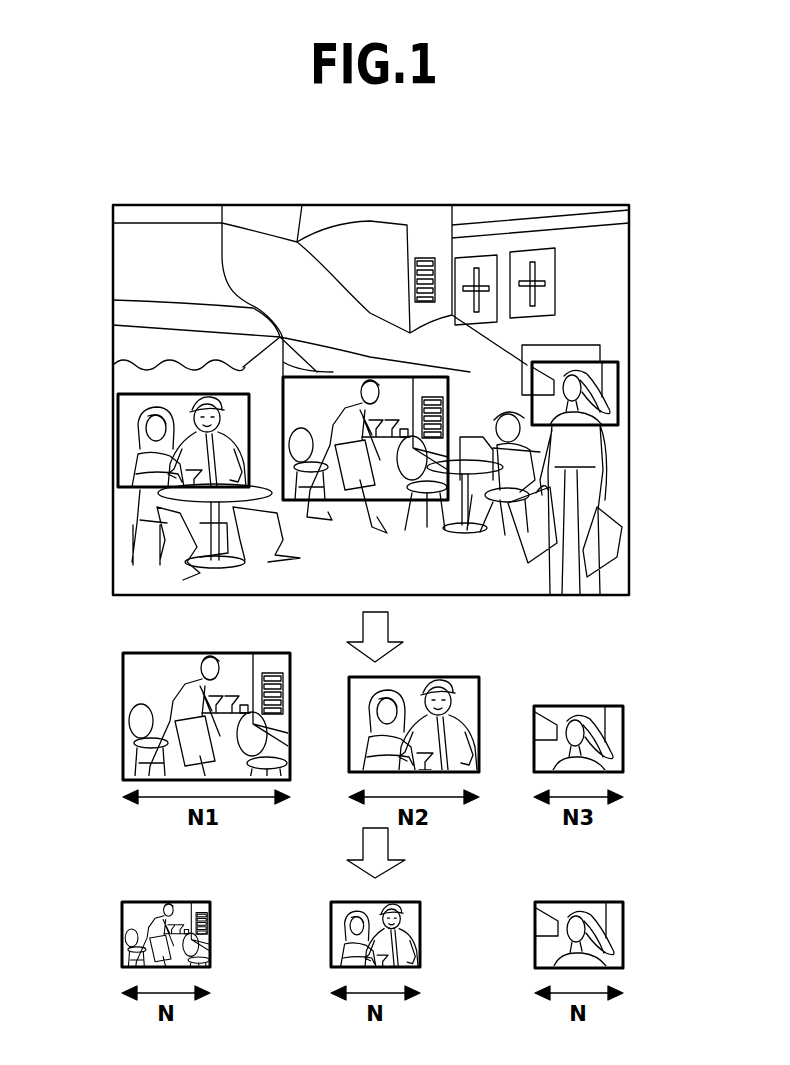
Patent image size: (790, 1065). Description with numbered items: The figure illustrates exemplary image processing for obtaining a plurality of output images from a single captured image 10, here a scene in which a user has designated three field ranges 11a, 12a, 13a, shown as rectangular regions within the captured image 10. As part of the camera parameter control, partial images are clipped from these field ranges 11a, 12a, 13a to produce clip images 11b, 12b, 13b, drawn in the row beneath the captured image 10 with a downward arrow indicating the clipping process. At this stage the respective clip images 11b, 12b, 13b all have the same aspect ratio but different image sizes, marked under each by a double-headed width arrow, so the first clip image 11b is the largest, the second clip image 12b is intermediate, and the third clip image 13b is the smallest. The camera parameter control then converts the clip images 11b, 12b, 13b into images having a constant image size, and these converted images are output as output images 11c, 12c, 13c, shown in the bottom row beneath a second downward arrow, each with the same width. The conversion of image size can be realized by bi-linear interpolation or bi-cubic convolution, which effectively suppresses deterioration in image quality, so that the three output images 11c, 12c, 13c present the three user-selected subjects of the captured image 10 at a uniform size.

The captured image 10 is at (377, 400).
The field range 11a is at (113, 300).
The field range 12a is at (118, 455).
The field range 13a is at (607, 428).
The clip image 11b is at (123, 748).
The clip image 12b is at (423, 675).
The clip image 13b is at (587, 706).
The output image 11c is at (163, 902).
The output image 12c is at (350, 902).
The output image 13c is at (582, 902).